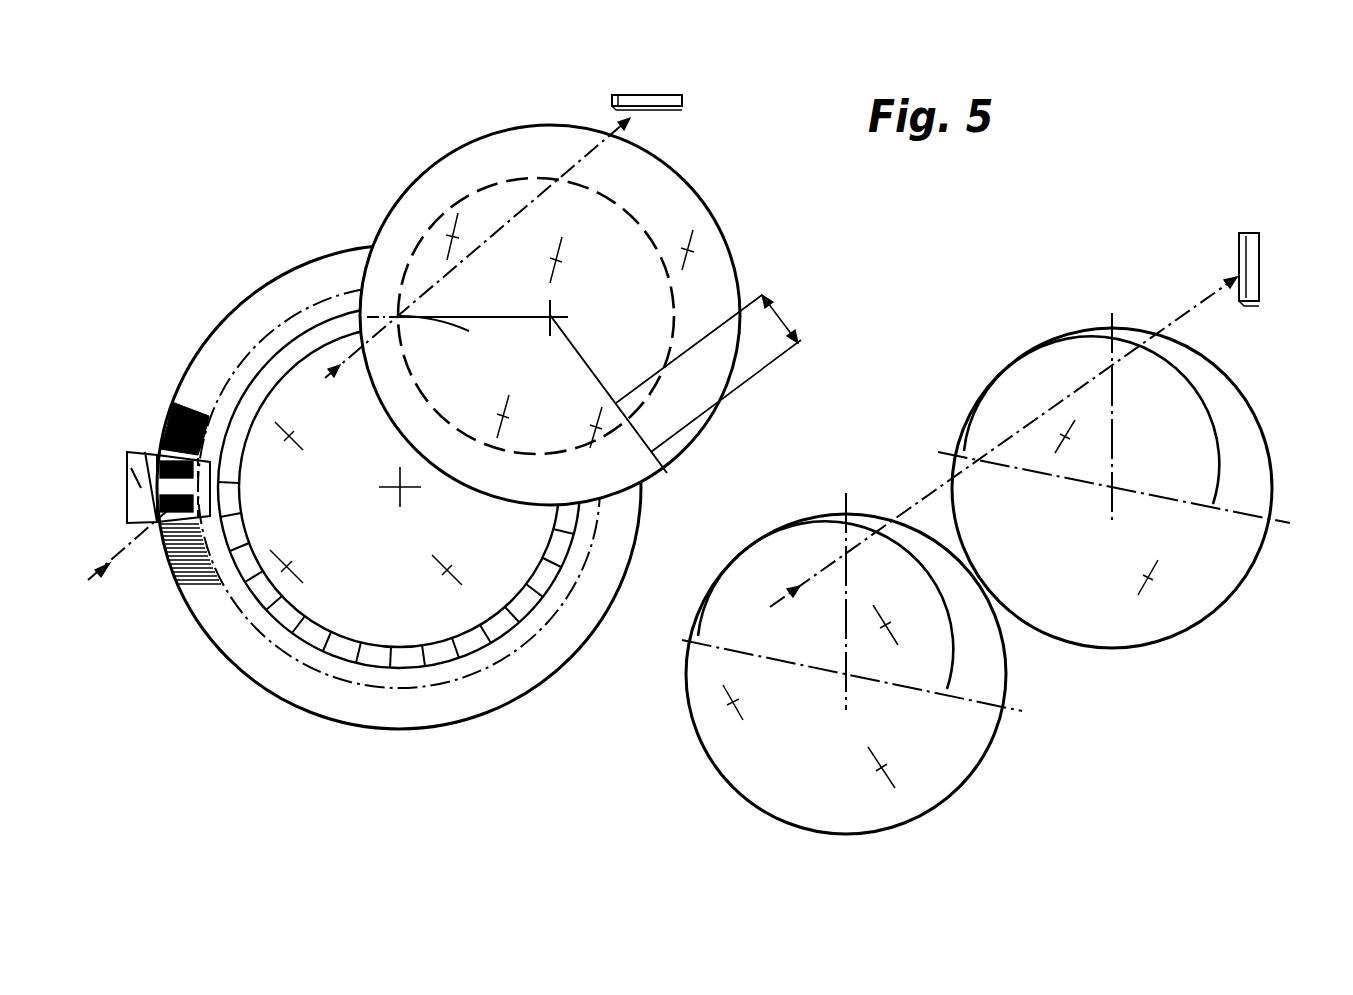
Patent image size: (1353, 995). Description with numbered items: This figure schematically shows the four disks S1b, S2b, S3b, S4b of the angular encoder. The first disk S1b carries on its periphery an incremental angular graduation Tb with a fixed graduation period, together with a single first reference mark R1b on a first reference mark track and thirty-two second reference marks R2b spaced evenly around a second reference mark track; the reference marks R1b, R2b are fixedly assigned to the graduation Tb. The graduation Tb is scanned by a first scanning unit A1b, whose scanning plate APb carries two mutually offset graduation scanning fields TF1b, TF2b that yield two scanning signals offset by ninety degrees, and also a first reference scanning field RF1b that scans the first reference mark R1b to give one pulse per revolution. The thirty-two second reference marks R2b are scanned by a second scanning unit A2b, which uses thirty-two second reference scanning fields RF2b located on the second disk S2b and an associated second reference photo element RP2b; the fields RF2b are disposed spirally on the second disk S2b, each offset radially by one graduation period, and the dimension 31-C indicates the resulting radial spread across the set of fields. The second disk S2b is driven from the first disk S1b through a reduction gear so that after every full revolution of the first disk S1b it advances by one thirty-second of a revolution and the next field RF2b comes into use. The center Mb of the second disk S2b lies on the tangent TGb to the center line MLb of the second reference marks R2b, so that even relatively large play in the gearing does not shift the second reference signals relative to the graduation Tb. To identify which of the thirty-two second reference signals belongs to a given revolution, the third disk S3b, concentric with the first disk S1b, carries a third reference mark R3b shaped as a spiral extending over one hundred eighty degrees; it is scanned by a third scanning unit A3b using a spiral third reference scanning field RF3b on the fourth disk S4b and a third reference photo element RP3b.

The first disk S1b is at (384, 724).
The second disk S2b is at (483, 157).
The third disk S3b is at (700, 742).
The fourth disk S4b is at (1192, 645).
The first reference mark R1b is at (212, 418).
The second reference marks R2b is at (310, 333).
The third reference mark R3b is at (780, 548).
The first reference scanning field RF1b is at (200, 485).
The second reference scanning fields RF2b is at (418, 242).
The third reference scanning field RF3b is at (1213, 455).
The incremental angular graduation Tb is at (178, 410).
The graduation scanning field TF1b is at (153, 453).
The graduation scanning field TF2b is at (152, 458).
The scanning plate APb is at (148, 523).
The first scanning unit A1b is at (133, 558).
The second scanning unit A2b is at (476, 264).
The third scanning unit A3b is at (994, 457).
The tangent TGb is at (497, 315).
The center of the second disk Mb is at (551, 314).
The center line of the second reference marks MLb is at (450, 325).
The dimension 31-C is at (780, 318).
The second reference photo element RP2b is at (657, 93).
The third reference photo element RP3b is at (1262, 264).